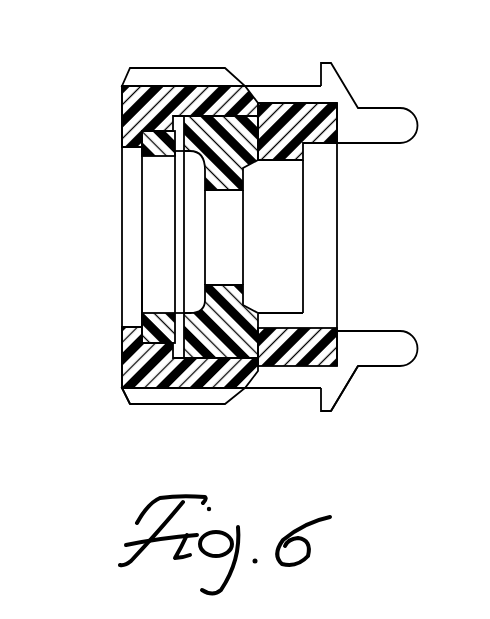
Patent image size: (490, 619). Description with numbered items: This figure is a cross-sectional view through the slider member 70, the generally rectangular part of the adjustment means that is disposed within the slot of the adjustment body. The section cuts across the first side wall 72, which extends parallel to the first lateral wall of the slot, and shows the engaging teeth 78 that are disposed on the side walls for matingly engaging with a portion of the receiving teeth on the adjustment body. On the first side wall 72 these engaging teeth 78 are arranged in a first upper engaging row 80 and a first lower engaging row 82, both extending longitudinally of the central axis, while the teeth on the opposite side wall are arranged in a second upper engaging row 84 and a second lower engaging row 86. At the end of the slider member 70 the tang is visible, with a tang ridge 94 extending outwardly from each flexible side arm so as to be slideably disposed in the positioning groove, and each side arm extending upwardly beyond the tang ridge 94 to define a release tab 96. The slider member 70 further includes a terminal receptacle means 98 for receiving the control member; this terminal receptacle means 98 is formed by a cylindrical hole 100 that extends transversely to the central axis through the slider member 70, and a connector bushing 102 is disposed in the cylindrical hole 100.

The slider member 70 is at (116, 95).
The first side wall 72 is at (124, 130).
The engaging teeth 78 is at (122, 408).
The first upper engaging row 80 is at (281, 87).
The first lower engaging row 82 is at (203, 74).
The second upper engaging row 84 is at (284, 373).
The second lower engaging row 86 is at (200, 393).
The tang ridge 94 is at (335, 396).
The release tab 96 is at (404, 332).
The terminal receptacle means 98 is at (136, 297).
The cylindrical hole 100 is at (330, 146).
The connector bushing 102 is at (141, 241).